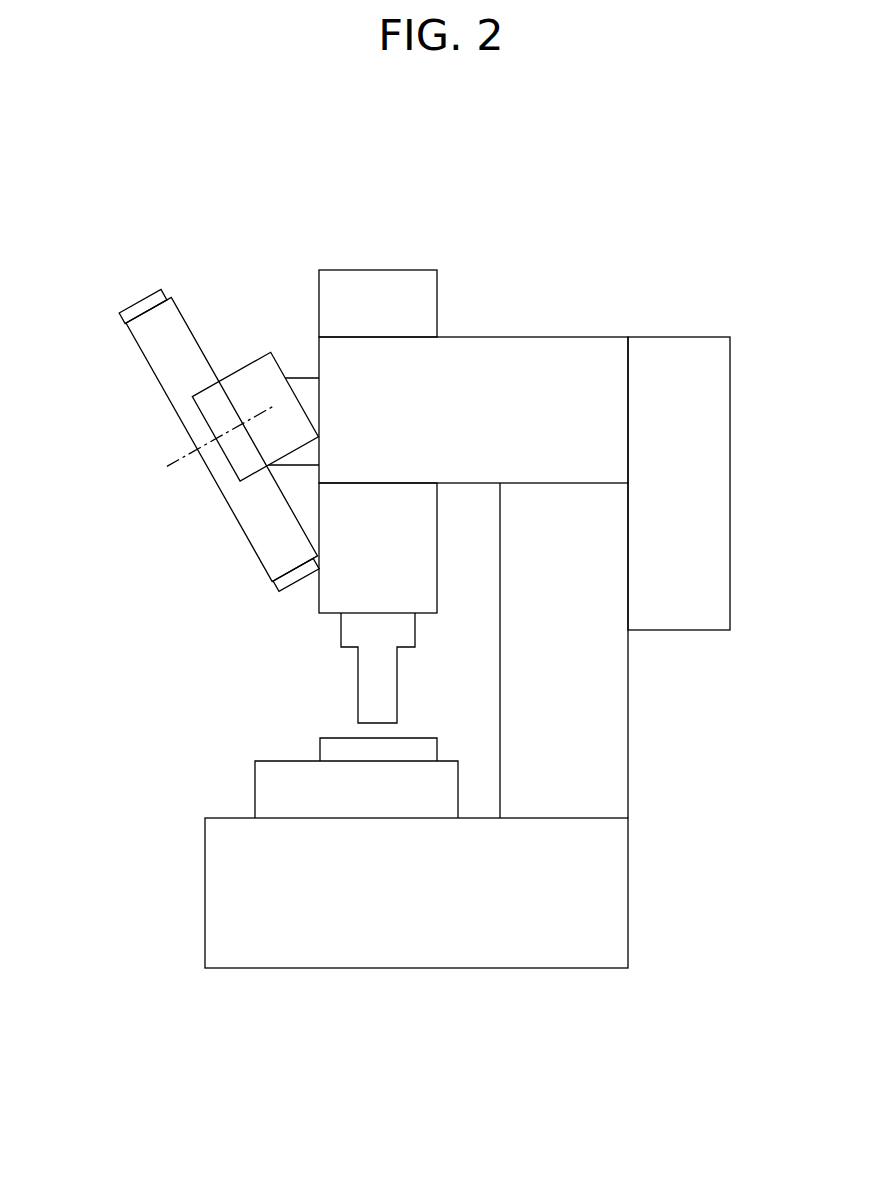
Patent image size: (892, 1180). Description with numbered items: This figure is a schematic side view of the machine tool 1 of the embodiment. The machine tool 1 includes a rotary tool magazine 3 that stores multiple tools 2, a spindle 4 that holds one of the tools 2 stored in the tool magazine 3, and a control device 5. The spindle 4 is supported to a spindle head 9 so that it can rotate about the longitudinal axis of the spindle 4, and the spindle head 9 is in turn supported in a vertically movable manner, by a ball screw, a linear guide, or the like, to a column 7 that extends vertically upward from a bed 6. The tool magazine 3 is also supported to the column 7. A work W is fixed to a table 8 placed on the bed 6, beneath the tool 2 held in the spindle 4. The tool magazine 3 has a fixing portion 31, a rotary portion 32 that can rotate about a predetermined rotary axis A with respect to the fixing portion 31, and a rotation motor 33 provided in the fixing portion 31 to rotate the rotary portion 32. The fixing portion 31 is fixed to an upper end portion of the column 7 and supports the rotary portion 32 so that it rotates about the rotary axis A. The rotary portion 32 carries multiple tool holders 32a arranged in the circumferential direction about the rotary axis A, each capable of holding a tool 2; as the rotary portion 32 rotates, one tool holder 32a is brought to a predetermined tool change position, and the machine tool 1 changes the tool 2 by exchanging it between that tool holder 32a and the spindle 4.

The machine tool 1 is at (702, 195).
The tool 2 is at (397, 683).
The tool magazine 3 is at (106, 355).
The spindle 4 is at (437, 547).
The control device 5 is at (730, 430).
The bed 6 is at (205, 896).
The column 7 is at (627, 706).
The table 8 is at (255, 790).
The spindle head 9 is at (538, 337).
The fixing portion 31 is at (297, 377).
The rotary portion 32 is at (174, 408).
The tool holder 32a is at (135, 304).
The rotation motor 33 is at (253, 362).
The rotary axis A is at (212, 445).
The work W is at (320, 745).